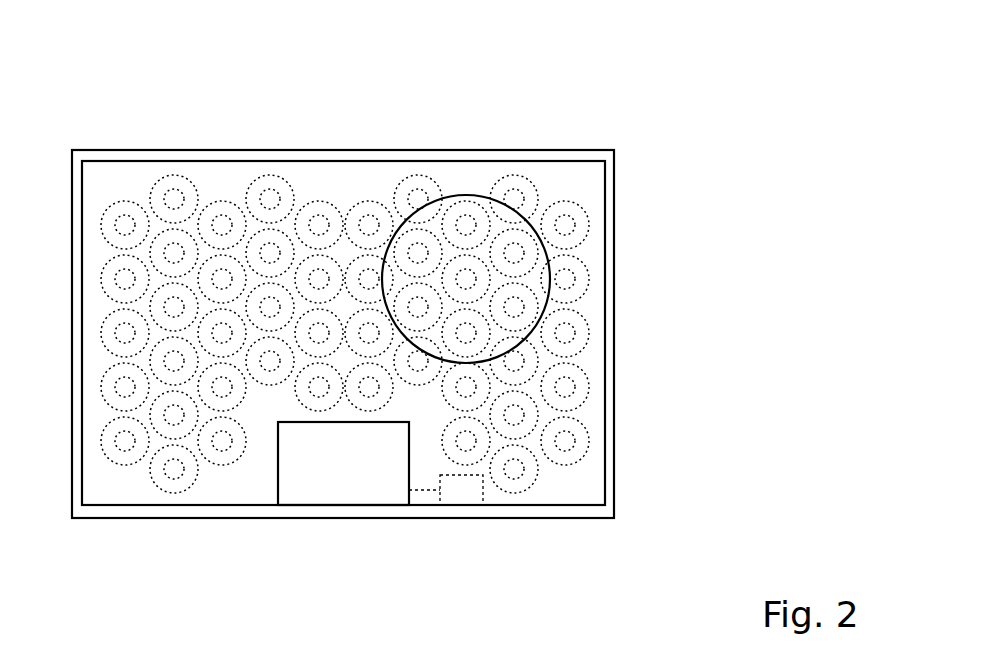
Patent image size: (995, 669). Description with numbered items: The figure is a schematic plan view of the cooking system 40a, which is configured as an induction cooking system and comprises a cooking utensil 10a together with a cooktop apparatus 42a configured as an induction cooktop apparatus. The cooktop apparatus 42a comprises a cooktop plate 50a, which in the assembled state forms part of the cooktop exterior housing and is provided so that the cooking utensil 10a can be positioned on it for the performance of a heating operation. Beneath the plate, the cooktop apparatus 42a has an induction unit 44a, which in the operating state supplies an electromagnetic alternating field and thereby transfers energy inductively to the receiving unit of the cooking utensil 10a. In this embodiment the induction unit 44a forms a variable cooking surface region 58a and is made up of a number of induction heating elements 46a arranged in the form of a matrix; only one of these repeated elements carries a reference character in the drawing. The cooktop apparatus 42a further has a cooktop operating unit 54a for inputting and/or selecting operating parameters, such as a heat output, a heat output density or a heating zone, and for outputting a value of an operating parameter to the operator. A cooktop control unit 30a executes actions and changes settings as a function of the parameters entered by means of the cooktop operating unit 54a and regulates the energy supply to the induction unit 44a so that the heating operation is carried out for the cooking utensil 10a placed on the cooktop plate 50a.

The cooking utensil 10a is at (548, 263).
The cooktop control unit 30a is at (462, 487).
The cooking system 40a is at (697, 110).
The cooktop apparatus 42a is at (667, 166).
The induction unit 44a is at (269, 171).
The induction heating element 46a is at (198, 185).
The cooktop plate 50a is at (462, 188).
The cooktop operating unit 54a is at (340, 485).
The variable cooking surface region 58a is at (226, 172).